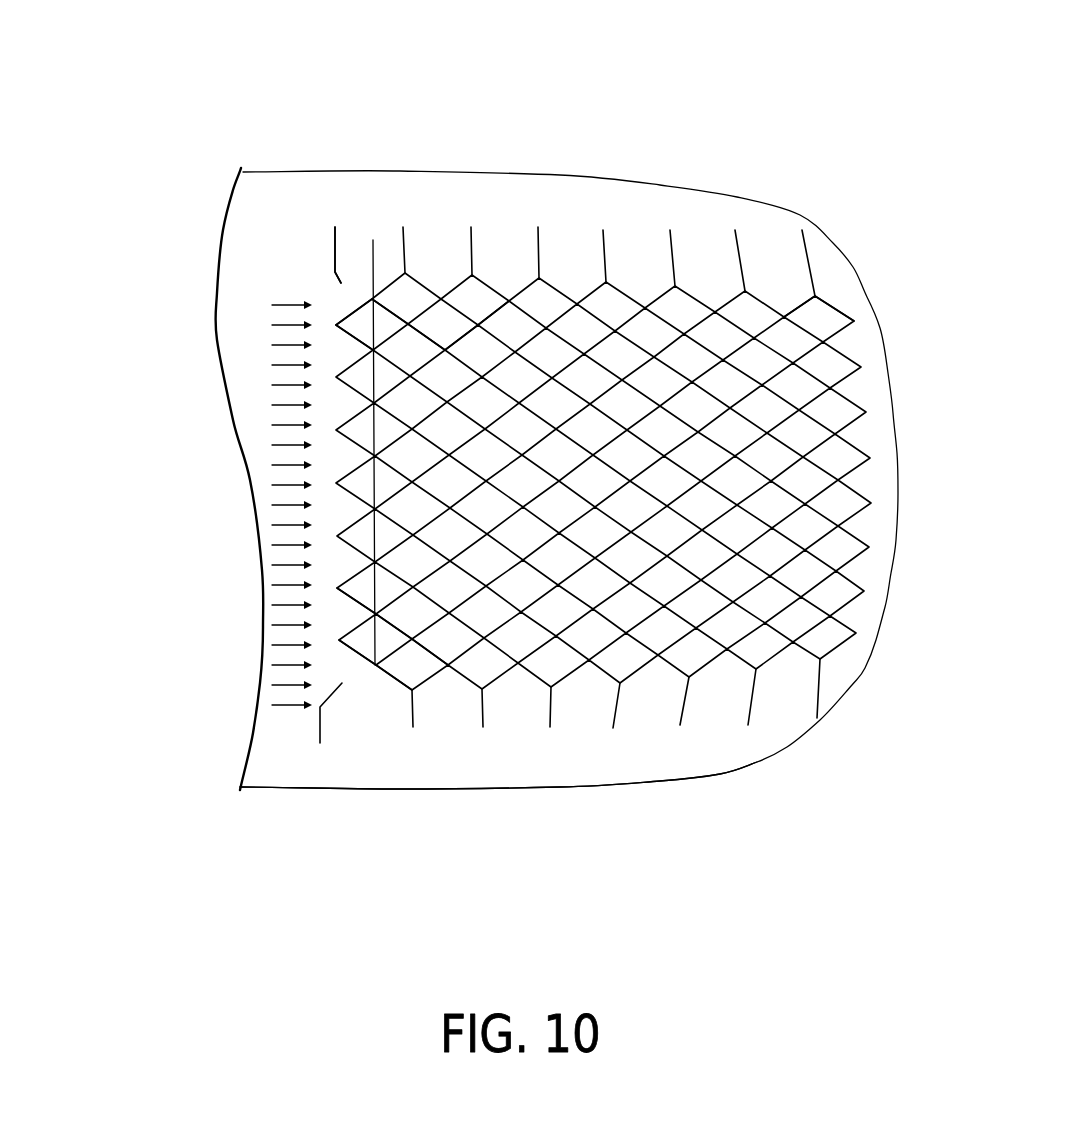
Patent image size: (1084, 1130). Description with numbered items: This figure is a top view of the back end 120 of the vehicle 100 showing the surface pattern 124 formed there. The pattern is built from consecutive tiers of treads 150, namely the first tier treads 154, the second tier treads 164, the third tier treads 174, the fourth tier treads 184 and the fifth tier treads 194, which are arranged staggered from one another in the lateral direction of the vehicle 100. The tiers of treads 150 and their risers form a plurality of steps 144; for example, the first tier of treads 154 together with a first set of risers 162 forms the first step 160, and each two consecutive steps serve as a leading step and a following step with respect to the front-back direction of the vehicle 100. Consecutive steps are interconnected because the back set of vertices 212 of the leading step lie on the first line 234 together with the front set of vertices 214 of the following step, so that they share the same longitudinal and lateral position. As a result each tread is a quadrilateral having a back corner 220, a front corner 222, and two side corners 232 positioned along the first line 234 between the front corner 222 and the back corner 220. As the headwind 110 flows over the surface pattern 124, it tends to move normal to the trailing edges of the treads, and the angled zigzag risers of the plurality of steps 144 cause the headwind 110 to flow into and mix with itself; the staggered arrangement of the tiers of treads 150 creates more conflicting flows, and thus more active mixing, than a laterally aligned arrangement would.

The vehicle 100 is at (855, 217).
The headwind 110 is at (300, 700).
The back end 120 is at (753, 763).
The surface pattern 124 is at (828, 318).
The plurality of steps 144 is at (330, 333).
The tiers of treads 150 is at (340, 283).
The first tier of treads 154 is at (352, 293).
The first step 160 is at (337, 682).
The first set of risers 162 is at (378, 668).
The second tier of treads 164 is at (358, 328).
The third tier treads 174 is at (443, 327).
The fourth tier treads 184 is at (407, 298).
The fifth tier treads 194 is at (480, 300).
The back set of vertices 212 is at (339, 589).
The front set of vertices 214 is at (373, 240).
The back corner 220 is at (413, 648).
The front corner 222 is at (343, 672).
The side corners 232 is at (365, 590).
The first line 234 is at (339, 589).